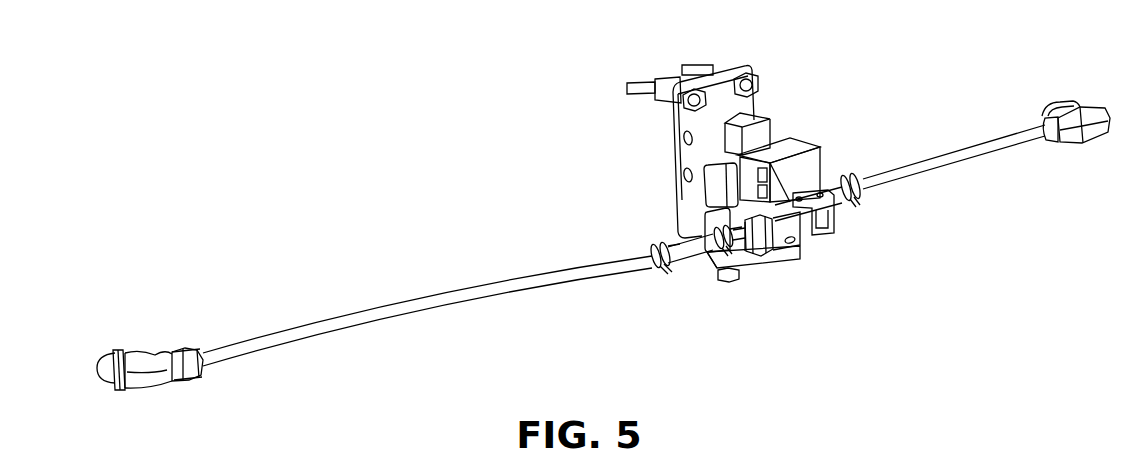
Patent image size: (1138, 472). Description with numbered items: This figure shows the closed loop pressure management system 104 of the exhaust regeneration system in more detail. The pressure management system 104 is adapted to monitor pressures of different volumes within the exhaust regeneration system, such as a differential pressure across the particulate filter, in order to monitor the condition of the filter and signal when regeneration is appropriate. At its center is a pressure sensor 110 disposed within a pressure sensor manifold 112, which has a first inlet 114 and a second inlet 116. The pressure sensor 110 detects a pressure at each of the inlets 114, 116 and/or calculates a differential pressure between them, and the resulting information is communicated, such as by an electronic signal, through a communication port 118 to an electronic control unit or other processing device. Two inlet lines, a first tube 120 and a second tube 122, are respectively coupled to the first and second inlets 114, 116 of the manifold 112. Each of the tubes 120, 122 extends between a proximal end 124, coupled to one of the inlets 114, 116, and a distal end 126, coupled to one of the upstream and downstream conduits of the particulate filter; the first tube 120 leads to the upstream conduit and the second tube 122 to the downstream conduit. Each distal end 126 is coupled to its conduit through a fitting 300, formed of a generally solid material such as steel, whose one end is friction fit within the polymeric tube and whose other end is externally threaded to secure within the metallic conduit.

The pressure management system 104 is at (462, 185).
The pressure sensor 110 is at (790, 168).
The pressure sensor manifold 112 is at (834, 259).
The first inlet 114 is at (774, 240).
The second inlet 116 is at (843, 217).
The communication port 118 is at (712, 190).
The first tube 120 is at (400, 313).
The second tube 122 is at (968, 164).
The proximal end 124 is at (652, 260).
The distal end 126 is at (203, 363).
The fitting 300 is at (117, 357).